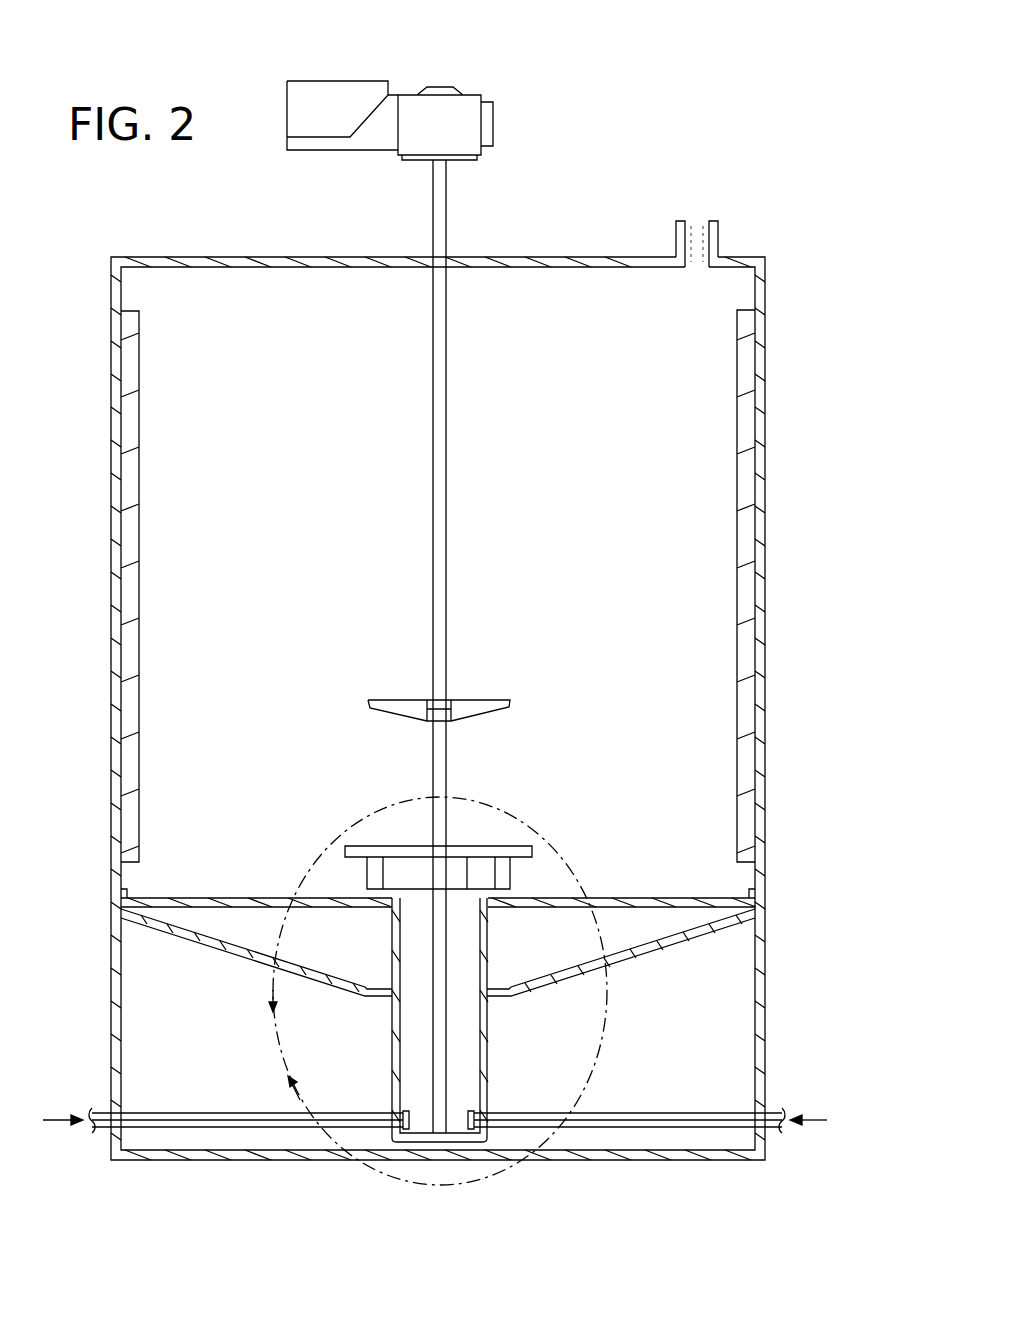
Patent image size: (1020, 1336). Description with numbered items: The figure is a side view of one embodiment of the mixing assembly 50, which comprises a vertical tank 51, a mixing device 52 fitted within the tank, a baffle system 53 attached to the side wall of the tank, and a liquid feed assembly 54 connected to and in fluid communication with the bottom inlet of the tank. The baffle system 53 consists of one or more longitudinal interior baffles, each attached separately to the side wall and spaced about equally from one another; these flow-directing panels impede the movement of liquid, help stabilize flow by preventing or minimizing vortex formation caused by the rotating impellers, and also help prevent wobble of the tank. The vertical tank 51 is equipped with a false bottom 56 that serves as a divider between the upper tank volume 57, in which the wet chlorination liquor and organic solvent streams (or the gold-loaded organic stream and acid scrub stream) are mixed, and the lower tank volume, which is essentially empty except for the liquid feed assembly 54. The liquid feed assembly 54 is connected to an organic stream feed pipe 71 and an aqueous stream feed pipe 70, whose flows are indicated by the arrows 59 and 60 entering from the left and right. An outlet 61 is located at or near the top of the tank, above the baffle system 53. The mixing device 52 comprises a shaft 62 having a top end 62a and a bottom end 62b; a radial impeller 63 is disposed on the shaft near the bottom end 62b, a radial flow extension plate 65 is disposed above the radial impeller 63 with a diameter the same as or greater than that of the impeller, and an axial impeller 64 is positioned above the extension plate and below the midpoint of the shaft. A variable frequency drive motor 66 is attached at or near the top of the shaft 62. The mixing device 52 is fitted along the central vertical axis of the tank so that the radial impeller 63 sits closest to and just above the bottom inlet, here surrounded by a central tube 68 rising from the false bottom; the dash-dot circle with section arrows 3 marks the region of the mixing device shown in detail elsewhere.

The mixing assembly 50 is at (686, 96).
The vertical tank 51 is at (112, 278).
The mixing device 52 is at (500, 62).
The baffle system 53 is at (140, 364).
The liquid feed assembly 54 is at (503, 1048).
The false bottom 56 is at (150, 894).
The upper tank volume 57 is at (678, 517).
The inlet flow 59 is at (57, 1125).
The outlet flow 60 is at (812, 1125).
The outlet 61 is at (700, 228).
The shaft 62 is at (447, 432).
The top end 62a is at (530, 116).
The bottom end 62b is at (535, 790).
The radial impeller 63 is at (512, 873).
The axial impeller 64 is at (385, 699).
The radial flow extension plate 65 is at (534, 847).
The variable frequency drive motor 66 is at (412, 100).
The central tube 68 is at (432, 946).
The aqueous stream feed pipe 70 is at (667, 1112).
The organic stream feed pipe 71 is at (185, 1112).
The section line 3- 3 is at (276, 1045).